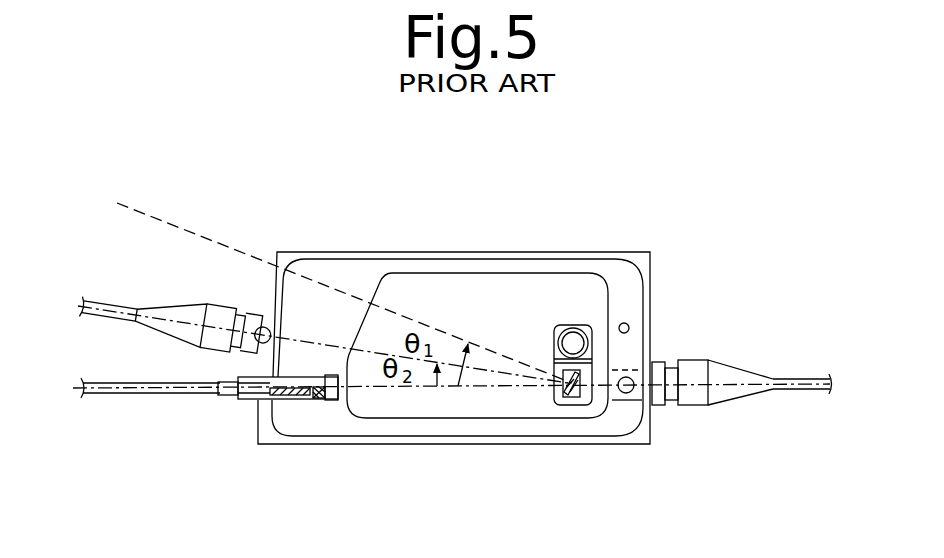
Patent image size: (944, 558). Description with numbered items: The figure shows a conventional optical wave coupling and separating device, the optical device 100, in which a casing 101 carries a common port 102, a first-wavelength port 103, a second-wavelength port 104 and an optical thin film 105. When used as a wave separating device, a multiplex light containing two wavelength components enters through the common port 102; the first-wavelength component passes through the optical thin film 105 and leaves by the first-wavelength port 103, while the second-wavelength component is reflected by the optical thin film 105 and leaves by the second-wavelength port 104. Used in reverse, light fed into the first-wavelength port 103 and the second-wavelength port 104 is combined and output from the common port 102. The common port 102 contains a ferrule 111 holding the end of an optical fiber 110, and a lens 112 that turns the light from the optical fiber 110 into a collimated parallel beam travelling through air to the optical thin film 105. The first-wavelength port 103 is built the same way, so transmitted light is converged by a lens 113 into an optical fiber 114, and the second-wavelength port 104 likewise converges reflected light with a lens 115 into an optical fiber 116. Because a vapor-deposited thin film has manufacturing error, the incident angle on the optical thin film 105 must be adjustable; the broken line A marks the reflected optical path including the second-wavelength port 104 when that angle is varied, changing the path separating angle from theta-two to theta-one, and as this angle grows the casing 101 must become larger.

The optical device 100 is at (454, 203).
The casing 101 is at (600, 251).
The common port 102 is at (248, 400).
The λ1 port 103 is at (740, 408).
The λ2 port 104 is at (157, 307).
The optical thin film 105 is at (573, 407).
The optical fiber 110 is at (105, 395).
The ferrule 111 is at (276, 402).
The lens 112 is at (330, 402).
The lens 113 is at (628, 394).
The optical fiber 114 is at (812, 391).
The lens 115 is at (258, 312).
The optical fiber 116 is at (96, 314).
The broken line A is at (344, 293).